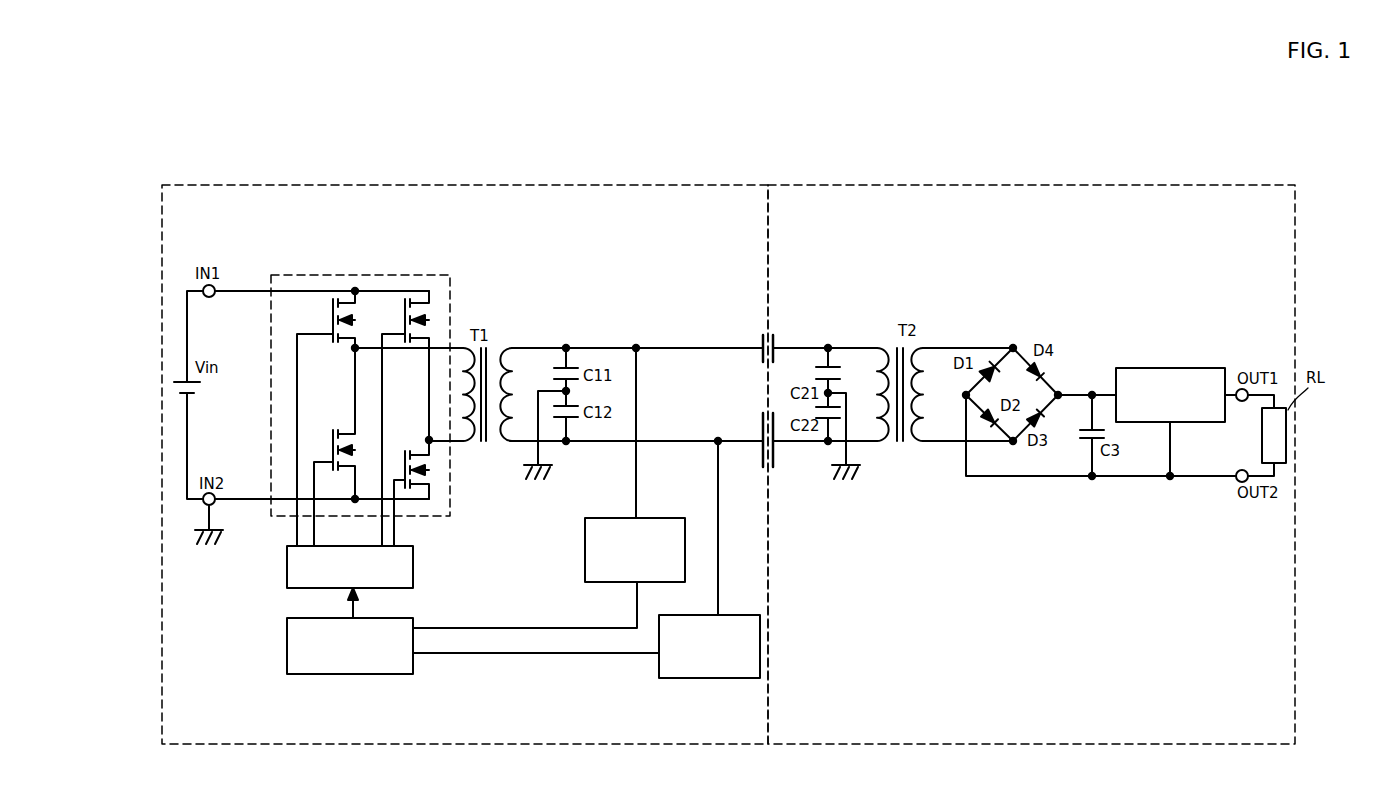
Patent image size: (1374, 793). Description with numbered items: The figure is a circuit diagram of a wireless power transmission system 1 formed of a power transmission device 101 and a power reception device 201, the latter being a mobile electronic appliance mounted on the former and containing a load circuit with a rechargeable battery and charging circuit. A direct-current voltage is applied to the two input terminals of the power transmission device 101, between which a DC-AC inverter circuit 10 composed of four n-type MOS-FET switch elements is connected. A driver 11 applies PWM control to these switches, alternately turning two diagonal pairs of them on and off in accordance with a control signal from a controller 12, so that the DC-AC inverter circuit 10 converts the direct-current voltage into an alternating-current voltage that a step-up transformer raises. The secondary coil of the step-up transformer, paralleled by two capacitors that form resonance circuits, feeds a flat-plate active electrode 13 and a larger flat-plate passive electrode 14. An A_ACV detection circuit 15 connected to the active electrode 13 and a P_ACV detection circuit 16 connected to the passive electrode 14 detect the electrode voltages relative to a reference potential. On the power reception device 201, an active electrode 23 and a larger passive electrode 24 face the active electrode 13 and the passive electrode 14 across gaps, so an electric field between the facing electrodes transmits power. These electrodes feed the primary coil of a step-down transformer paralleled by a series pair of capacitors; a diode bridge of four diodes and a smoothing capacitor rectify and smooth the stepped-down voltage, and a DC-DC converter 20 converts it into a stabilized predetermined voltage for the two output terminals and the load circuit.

The wireless power transmission system 1 is at (1109, 135).
The power transmission device 101 is at (182, 184).
The power reception device 201 is at (1284, 184).
The DC-AC inverter circuit 10 is at (290, 275).
The driver 11 is at (413, 563).
The controller 12 is at (413, 620).
The active electrode 13 is at (761, 348).
The passive electrode 14 is at (761, 468).
The A_ACV detection circuit 15 is at (585, 525).
The P_ACV detection circuit 16 is at (733, 615).
The DC-DC converter 20 is at (1210, 368).
The active electrode 23 is at (776, 344).
The passive electrode 24 is at (775, 468).